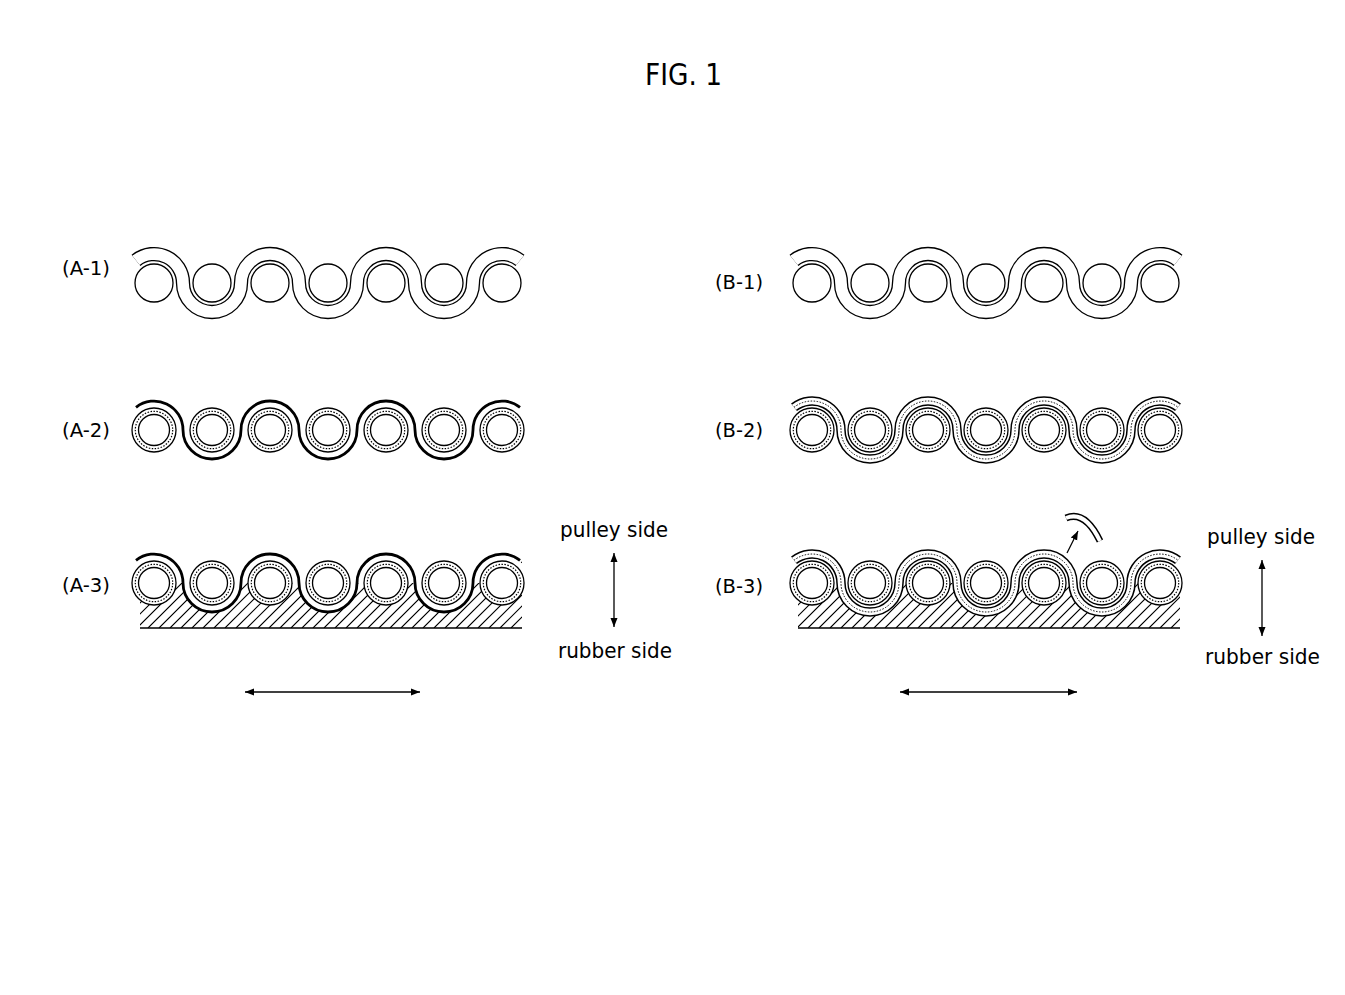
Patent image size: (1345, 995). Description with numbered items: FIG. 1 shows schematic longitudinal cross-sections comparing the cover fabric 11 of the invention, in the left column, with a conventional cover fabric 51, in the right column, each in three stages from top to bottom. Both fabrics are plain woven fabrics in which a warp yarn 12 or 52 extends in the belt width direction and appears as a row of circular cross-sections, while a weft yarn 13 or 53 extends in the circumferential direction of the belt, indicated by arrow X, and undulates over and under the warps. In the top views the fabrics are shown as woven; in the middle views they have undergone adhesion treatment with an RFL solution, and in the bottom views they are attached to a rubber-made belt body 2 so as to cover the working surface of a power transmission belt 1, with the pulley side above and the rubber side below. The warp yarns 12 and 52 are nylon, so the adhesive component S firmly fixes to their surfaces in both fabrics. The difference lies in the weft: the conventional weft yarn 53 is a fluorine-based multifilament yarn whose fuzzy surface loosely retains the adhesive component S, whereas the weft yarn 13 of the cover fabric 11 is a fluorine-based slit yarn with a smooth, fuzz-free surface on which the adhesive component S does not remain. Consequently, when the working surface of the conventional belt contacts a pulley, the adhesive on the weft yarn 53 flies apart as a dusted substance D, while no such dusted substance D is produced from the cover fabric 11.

The power transmission belt 1 is at (671, 623).
The belt body 2 is at (382, 630).
The cover fabric 11 is at (342, 392).
The warp yarn 12 is at (210, 272).
The weft yarn 13 is at (270, 252).
The conventional cover fabric 51 is at (1002, 393).
The warp yarn 52 is at (868, 272).
The weft yarn 53 is at (928, 250).
The adhesive component S is at (288, 412).
The dusted substance D is at (1097, 523).
The arrow X is at (661, 710).